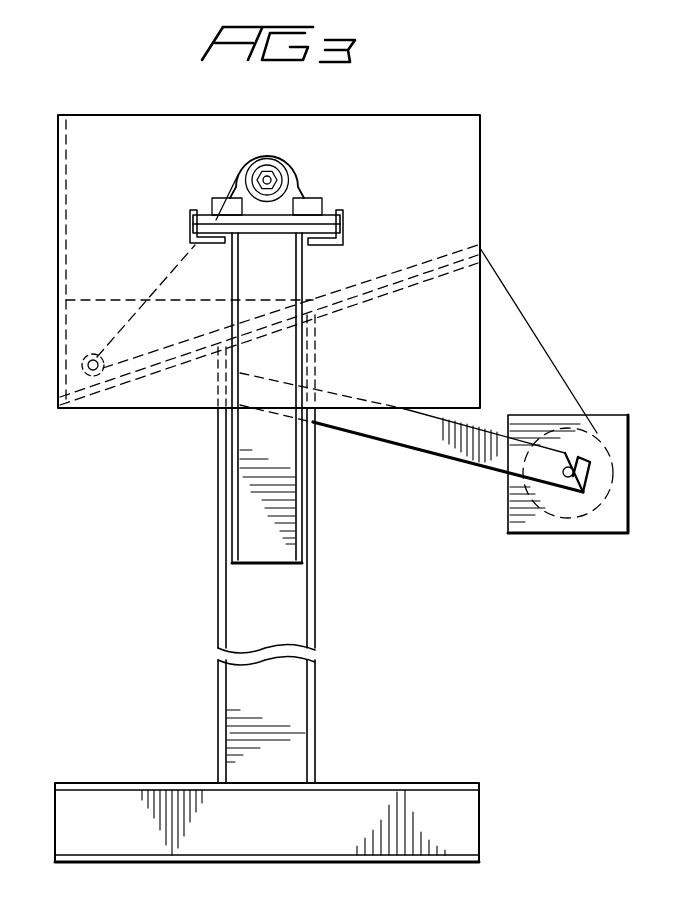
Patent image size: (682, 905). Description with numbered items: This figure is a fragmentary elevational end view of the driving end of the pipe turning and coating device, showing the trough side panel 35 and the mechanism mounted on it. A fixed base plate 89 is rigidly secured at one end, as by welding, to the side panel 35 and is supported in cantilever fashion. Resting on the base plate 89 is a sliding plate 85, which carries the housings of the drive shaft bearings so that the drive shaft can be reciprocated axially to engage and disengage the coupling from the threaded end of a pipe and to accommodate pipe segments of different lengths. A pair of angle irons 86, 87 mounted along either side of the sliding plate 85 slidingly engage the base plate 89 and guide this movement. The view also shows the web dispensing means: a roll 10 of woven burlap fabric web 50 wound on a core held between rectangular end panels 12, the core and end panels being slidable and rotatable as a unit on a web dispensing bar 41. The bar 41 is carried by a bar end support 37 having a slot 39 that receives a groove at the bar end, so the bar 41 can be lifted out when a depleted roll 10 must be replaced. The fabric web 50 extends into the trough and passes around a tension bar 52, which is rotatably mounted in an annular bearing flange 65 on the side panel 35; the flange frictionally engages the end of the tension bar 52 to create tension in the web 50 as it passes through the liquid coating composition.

The roll 10 is at (607, 500).
The end panel 12 is at (630, 515).
The side panel 35 is at (457, 217).
The bar end support 37 is at (378, 432).
The slot 39 is at (590, 465).
The web dispensing bar 41 is at (568, 478).
The fabric web 50 is at (552, 362).
The tension bar 52 is at (107, 355).
The bearing flange 65 is at (100, 376).
The sliding plate 85 is at (205, 212).
The angle iron 86 is at (190, 213).
The angle iron 87 is at (343, 229).
The base plate 89 is at (322, 227).